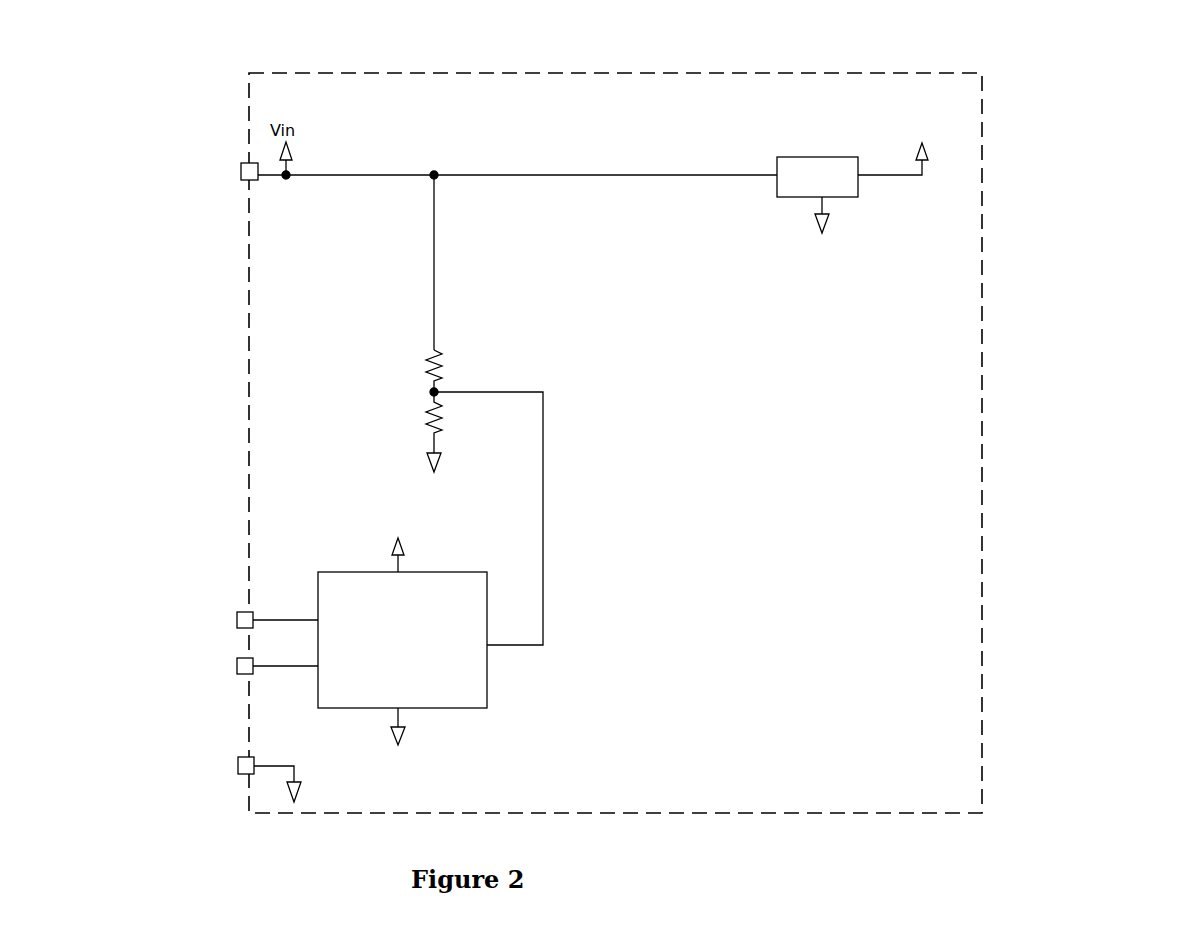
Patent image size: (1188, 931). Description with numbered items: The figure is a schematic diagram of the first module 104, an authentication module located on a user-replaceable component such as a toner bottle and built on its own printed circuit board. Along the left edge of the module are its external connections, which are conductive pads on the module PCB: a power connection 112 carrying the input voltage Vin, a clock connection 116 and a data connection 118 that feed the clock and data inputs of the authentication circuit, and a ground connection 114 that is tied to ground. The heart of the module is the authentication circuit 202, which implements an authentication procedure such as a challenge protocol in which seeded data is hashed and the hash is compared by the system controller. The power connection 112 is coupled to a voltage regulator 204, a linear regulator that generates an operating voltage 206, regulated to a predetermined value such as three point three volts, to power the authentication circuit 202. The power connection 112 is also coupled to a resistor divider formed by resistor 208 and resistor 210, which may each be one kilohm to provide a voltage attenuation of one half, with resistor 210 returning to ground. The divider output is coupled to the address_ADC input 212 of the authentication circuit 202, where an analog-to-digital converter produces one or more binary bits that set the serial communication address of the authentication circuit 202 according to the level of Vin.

The first module 104 is at (1082, 86).
The power connection 112 is at (243, 163).
The ground connection 114 is at (240, 757).
The clock connection 116 is at (253, 612).
The data connection 118 is at (253, 672).
The authentication circuit 202 is at (427, 708).
The voltage regulator 204 is at (817, 157).
The operating voltage 206 is at (885, 176).
The resistor 208 is at (427, 372).
The resistor 210 is at (427, 436).
The address_ADC input 212 is at (487, 650).